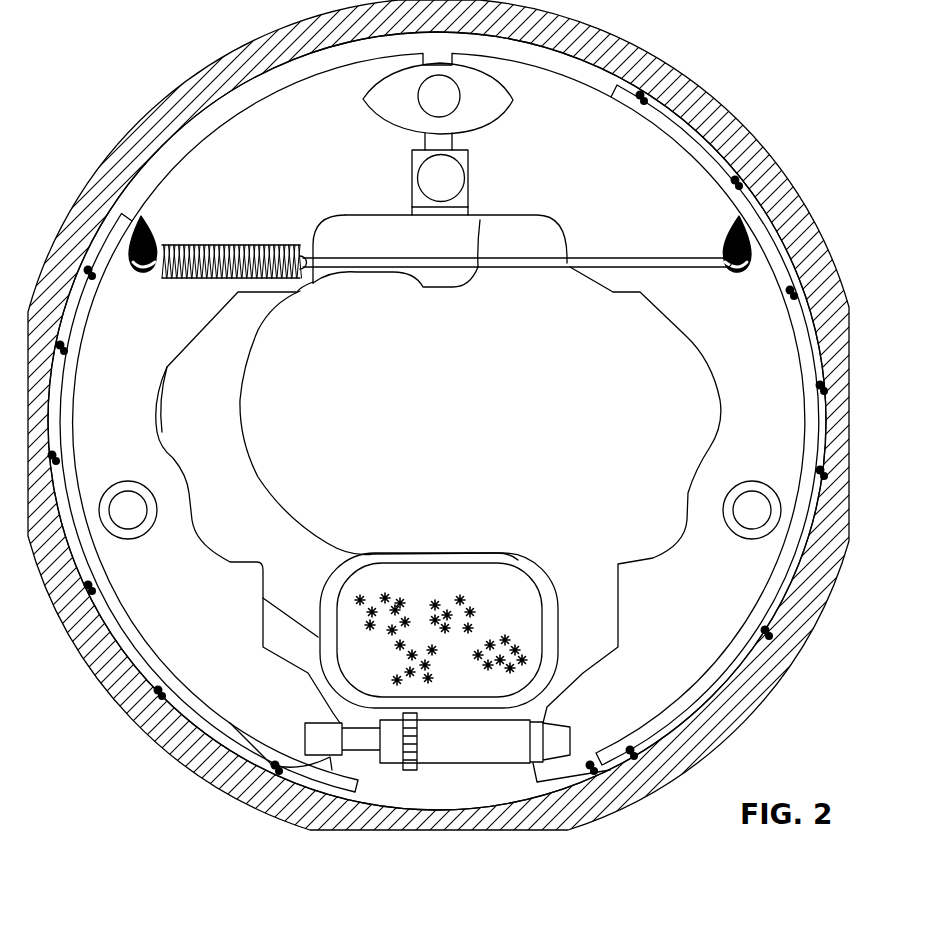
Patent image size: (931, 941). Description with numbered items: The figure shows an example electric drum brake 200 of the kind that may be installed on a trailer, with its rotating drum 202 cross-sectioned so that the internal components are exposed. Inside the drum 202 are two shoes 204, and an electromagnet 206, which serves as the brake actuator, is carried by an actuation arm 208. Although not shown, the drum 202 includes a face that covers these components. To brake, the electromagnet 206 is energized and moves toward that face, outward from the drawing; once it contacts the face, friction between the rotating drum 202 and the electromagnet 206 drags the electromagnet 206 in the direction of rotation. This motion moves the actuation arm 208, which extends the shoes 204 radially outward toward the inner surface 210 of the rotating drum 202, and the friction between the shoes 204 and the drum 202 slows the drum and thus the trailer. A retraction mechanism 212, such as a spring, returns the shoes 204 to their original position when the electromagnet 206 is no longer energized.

The electric drum brake 200 is at (132, 29).
The rotating drum 202 is at (143, 117).
The shoes 204 is at (685, 330).
The electromagnet 206 is at (527, 578).
The actuation arm 208 is at (278, 532).
The inner surface 210 is at (245, 82).
The retraction mechanism 212 is at (480, 265).